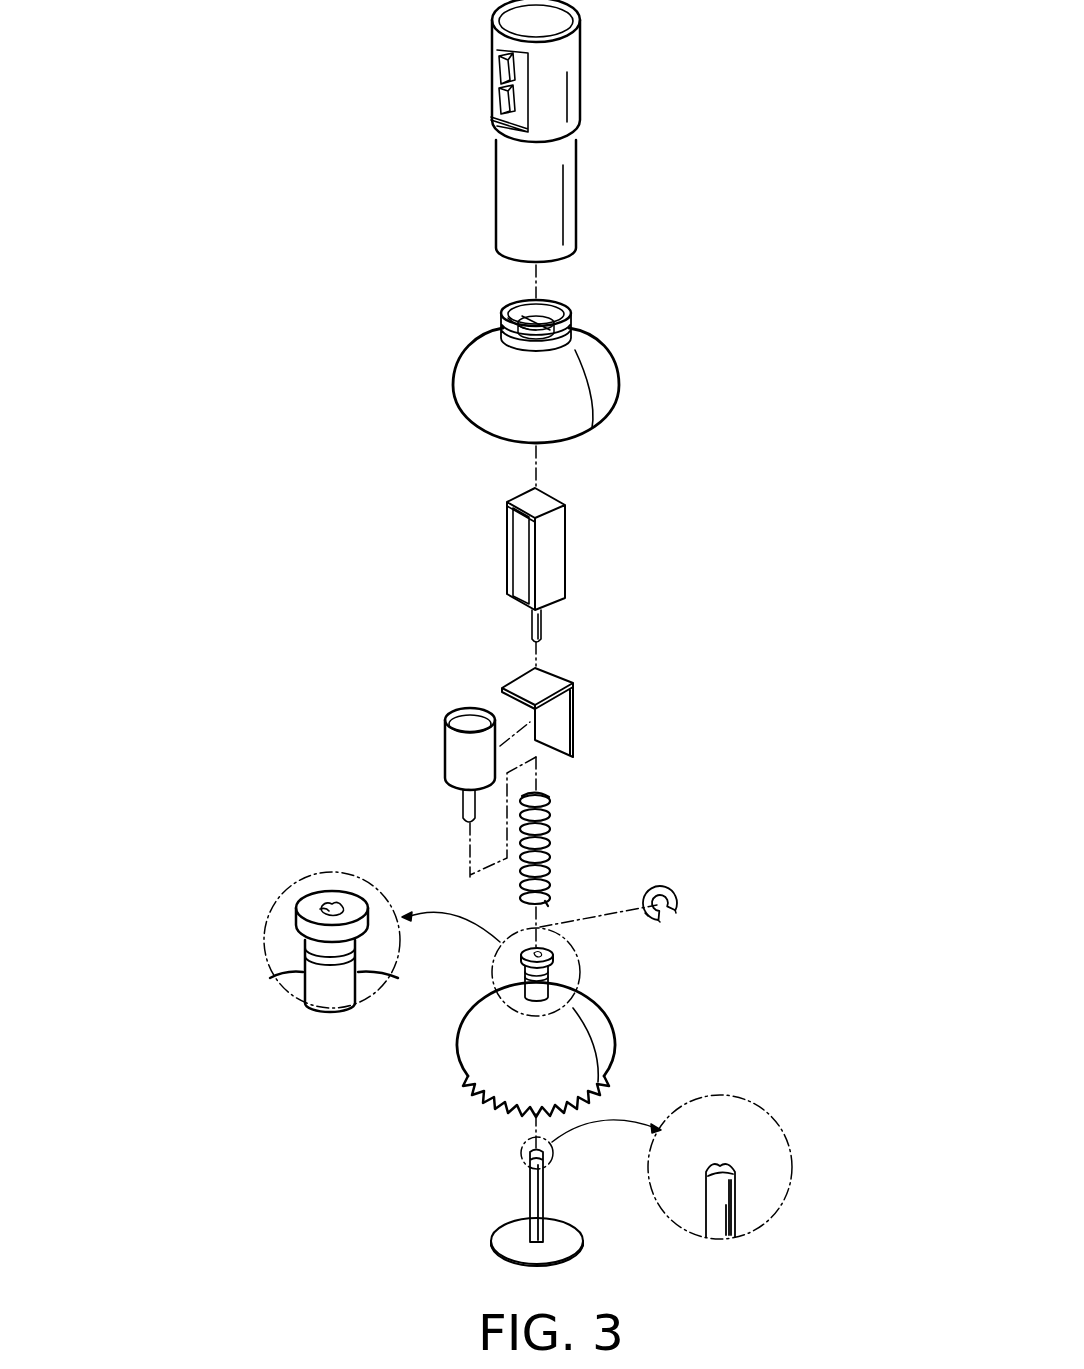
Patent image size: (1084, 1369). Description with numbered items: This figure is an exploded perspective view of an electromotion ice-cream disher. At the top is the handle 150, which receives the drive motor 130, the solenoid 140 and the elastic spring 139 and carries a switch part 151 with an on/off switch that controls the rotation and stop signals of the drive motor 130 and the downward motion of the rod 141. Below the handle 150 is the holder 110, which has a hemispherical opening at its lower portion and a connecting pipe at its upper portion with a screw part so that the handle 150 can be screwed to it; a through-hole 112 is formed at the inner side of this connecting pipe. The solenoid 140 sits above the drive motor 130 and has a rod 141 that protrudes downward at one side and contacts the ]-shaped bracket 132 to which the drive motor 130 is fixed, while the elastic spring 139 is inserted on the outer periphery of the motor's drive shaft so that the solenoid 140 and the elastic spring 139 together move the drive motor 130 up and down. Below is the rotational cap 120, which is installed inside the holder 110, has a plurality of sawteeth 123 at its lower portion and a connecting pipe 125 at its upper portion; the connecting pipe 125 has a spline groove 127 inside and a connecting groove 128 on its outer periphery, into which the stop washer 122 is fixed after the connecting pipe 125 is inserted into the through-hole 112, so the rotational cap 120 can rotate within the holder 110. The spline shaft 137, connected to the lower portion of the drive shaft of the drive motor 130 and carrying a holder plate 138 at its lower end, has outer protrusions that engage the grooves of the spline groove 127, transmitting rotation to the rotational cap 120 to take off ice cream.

The holder 110 is at (607, 378).
The through-hole 112 is at (570, 320).
The rotational cap 120 is at (612, 1018).
The stop washer 122 is at (678, 905).
The sawteeth 123 is at (600, 1088).
The connecting pipe 125 is at (550, 975).
The spline groove 127 is at (521, 952).
The connecting groove 128 is at (526, 990).
The drive motor 130 is at (446, 745).
The ]-shaped bracket 132 is at (575, 695).
The spline shaft 137 is at (528, 1197).
The holder plate 138 is at (498, 1233).
The elastic spring 139 is at (552, 825).
The solenoid 140 is at (508, 540).
The rod 141 is at (531, 615).
The handle 150 is at (578, 147).
The switch part 151 is at (500, 100).